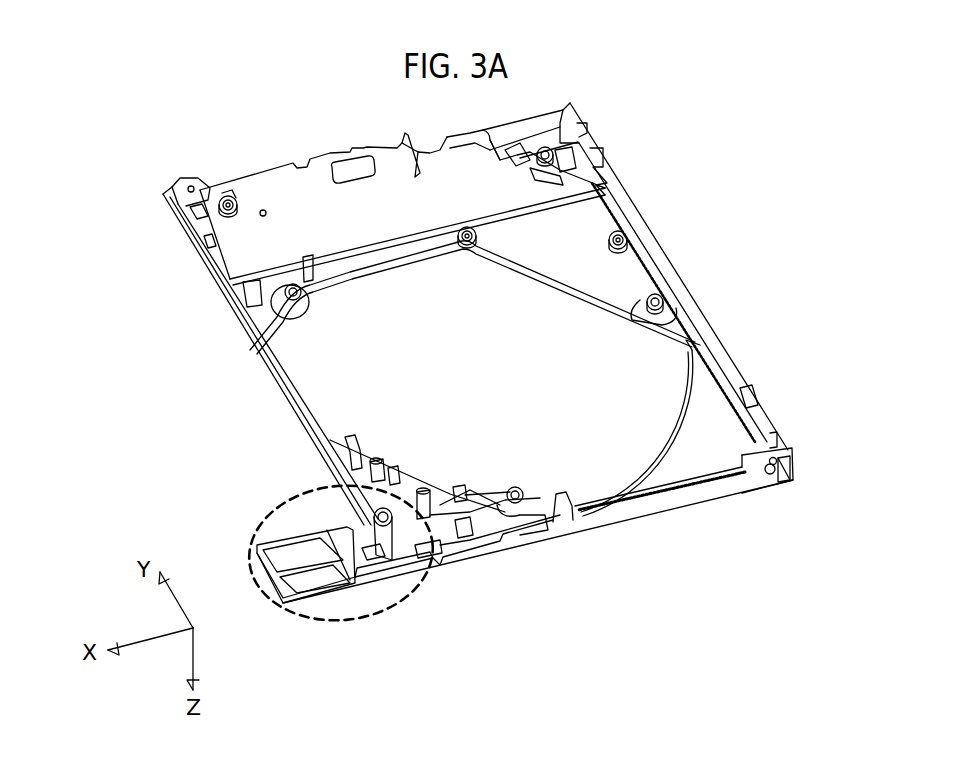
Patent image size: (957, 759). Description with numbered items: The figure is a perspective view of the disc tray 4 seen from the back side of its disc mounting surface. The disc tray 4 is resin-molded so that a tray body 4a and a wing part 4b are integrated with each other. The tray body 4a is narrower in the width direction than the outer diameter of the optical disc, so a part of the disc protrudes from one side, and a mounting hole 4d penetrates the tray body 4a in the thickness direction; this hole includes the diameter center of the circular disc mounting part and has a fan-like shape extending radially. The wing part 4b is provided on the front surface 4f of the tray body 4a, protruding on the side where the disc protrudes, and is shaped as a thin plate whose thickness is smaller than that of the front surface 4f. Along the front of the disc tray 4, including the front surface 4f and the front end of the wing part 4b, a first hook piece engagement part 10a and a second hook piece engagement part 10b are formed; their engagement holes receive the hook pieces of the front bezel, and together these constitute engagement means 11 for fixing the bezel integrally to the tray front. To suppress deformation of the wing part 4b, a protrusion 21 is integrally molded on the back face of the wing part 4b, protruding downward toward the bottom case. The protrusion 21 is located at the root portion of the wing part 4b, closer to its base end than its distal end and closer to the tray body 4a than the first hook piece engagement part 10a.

The disc tray 4 is at (662, 237).
The tray body 4a is at (290, 188).
The wing part 4b is at (359, 580).
The mounting hole 4d is at (552, 287).
The front surface 4f is at (592, 517).
The first hook piece engagement part 10a is at (310, 597).
The second hook piece engagement part 10b is at (775, 482).
The engagement means 11 is at (341, 553).
The protrusion 21 is at (370, 550).